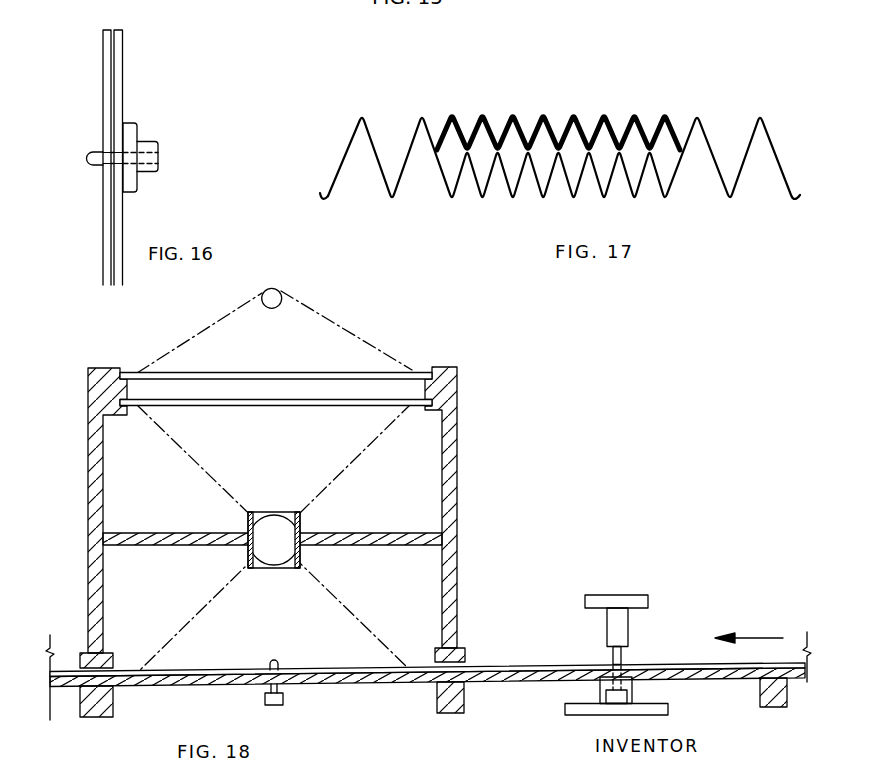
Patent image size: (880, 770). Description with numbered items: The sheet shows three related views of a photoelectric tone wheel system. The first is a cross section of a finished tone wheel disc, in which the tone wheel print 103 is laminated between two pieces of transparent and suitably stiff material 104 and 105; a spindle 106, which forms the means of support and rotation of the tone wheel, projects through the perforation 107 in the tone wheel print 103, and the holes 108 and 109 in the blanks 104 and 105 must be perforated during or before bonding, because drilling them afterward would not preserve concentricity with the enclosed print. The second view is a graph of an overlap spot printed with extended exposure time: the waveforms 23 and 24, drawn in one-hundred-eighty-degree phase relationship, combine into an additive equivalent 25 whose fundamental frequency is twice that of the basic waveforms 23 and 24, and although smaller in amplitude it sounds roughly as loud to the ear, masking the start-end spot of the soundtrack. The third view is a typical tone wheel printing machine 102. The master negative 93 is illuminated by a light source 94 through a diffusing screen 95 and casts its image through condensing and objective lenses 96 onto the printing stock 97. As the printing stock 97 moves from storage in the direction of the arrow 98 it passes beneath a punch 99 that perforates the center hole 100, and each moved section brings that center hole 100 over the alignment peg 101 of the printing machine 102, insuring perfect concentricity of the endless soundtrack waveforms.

In FIG. 17, the waveform 23 is at (363, 113).
In FIG. 17, the waveform 24 is at (698, 112).
In FIG. 17, the additive equivalent 25 is at (543, 113).
In FIG. 18, the master negative 93 is at (237, 406).
In FIG. 18, the light source 94 is at (279, 289).
In FIG. 18, the diffusing screen 95 is at (330, 372).
In FIG. 18, the condensing and objective lenses 96 is at (290, 568).
In FIG. 18, the printing stock 97 is at (298, 668).
In FIG. 18, the arrow 98 is at (748, 637).
In FIG. 18, the punch 99 is at (638, 670).
In FIG. 18, the center hole 100 is at (612, 665).
In FIG. 18, the alignment peg 101 is at (270, 662).
In FIG. 18, the printing machine 102 is at (88, 507).
In FIG. 16, the tone wheel print 103 is at (113, 243).
In FIG. 16, the transparent stiff material 104 is at (103, 83).
In FIG. 16, the transparent stiff material 105 is at (122, 84).
In FIG. 16, the spindle 106 is at (92, 153).
In FIG. 16, the perforation 107 is at (113, 163).
In FIG. 16, the hole 108 is at (128, 147).
In FIG. 16, the hole 109 is at (110, 149).